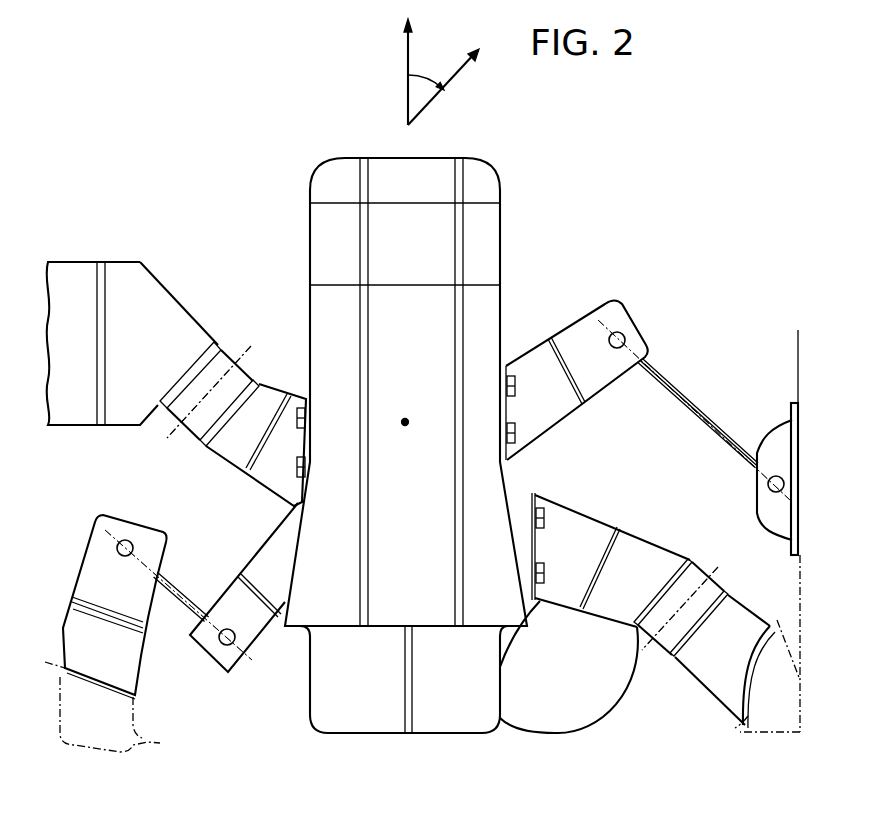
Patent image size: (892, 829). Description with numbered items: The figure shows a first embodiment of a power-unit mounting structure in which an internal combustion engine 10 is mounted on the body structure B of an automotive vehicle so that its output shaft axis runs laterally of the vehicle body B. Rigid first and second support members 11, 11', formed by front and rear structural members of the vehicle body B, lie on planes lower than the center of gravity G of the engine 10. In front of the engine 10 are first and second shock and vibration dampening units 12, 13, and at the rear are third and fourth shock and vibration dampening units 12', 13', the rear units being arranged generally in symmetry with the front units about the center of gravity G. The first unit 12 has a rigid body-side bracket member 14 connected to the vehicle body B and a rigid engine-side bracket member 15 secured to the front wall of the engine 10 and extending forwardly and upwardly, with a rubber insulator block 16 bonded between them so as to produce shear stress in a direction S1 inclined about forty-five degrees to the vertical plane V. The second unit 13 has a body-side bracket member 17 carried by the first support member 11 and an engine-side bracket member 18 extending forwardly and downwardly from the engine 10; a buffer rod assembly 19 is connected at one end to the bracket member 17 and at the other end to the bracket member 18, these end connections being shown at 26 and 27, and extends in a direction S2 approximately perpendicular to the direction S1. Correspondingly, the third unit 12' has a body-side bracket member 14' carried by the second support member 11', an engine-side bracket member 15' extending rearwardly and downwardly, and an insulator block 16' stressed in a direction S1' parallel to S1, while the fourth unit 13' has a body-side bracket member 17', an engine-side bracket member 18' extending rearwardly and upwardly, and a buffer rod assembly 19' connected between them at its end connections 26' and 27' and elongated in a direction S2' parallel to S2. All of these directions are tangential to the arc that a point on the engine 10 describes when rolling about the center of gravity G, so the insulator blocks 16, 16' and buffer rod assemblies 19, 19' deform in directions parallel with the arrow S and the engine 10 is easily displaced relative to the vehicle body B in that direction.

The internal combustion engine 10 is at (506, 181).
The first support member 11 is at (106, 707).
The second support member 11' is at (751, 643).
The first shock and vibration dampening unit 12 is at (210, 336).
The third shock and vibration dampening unit 12' is at (680, 579).
The second shock and vibration dampening unit 13 is at (178, 586).
The fourth shock and vibration dampening unit 13' is at (694, 407).
The body-side bracket member 14 is at (132, 328).
The body-side bracket member 14' is at (727, 653).
The engine-side bracket member 15 is at (256, 432).
The engine-side bracket member 15' is at (611, 548).
The resilient insulator block 16 is at (209, 382).
The resilient insulator block 16' is at (691, 607).
The body-side bracket member 17 is at (108, 607).
The body-side bracket member 17' is at (773, 469).
The engine-side bracket member 18 is at (244, 587).
The engine-side bracket member 18' is at (582, 372).
The buffer rod assembly 19 is at (181, 584).
The buffer rod assembly 19' is at (698, 413).
The pivot bolt 26 is at (131, 525).
The pivot bolt 26' is at (754, 496).
The pivot bolt 27 is at (203, 649).
The pivot bolt 27' is at (645, 331).
The direction of shear stress S1 is at (225, 390).
The direction of shear stress S1' is at (684, 594).
The direction of inclination of the buffer rod assembly S2 is at (178, 595).
The direction of elongation of the buffer rod assembly S2' is at (694, 410).
The center of gravity G is at (405, 419).
The vertical plane V is at (407, 56).
The arrow indicating direction of displacement S is at (457, 77).
The body structure of the vehicle B is at (797, 358).